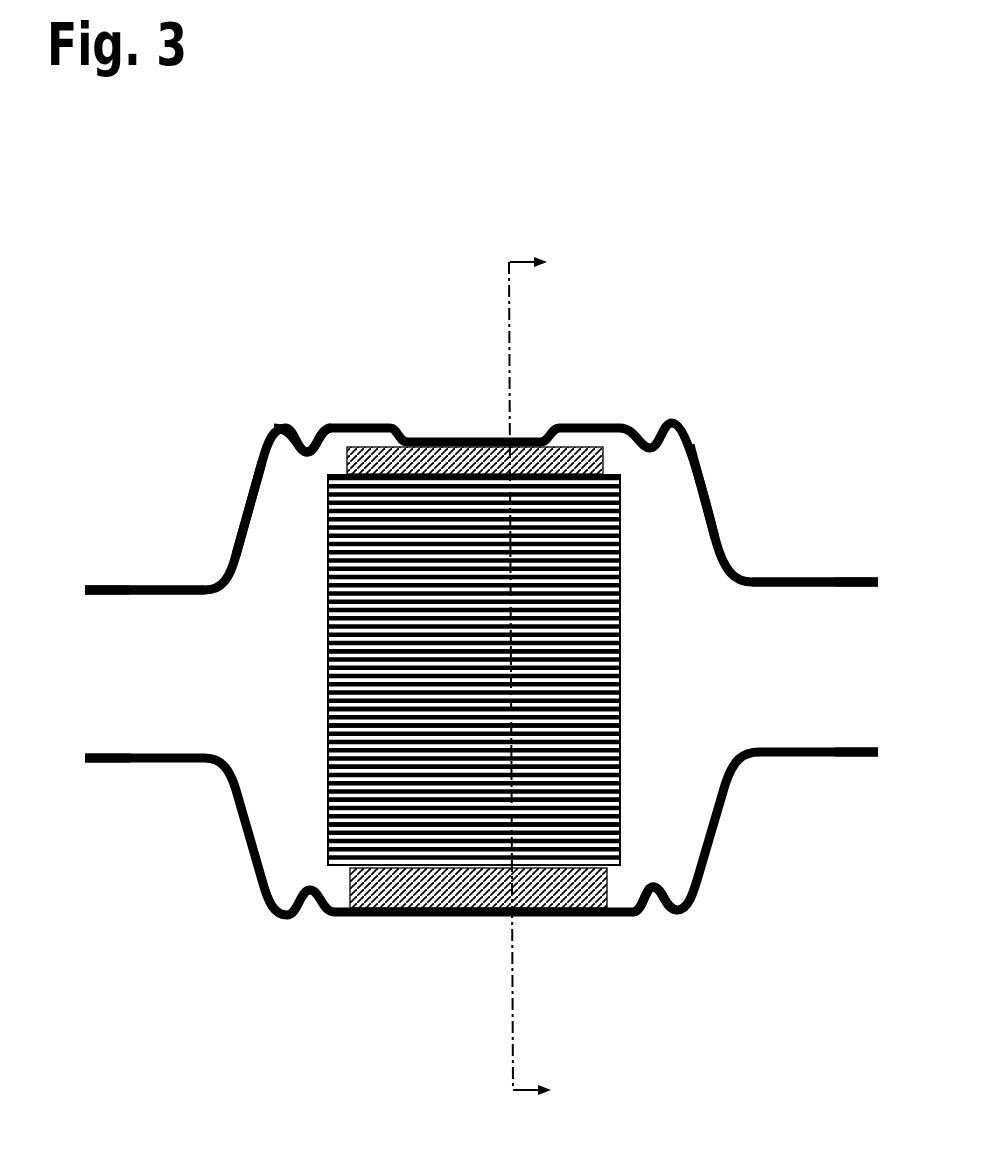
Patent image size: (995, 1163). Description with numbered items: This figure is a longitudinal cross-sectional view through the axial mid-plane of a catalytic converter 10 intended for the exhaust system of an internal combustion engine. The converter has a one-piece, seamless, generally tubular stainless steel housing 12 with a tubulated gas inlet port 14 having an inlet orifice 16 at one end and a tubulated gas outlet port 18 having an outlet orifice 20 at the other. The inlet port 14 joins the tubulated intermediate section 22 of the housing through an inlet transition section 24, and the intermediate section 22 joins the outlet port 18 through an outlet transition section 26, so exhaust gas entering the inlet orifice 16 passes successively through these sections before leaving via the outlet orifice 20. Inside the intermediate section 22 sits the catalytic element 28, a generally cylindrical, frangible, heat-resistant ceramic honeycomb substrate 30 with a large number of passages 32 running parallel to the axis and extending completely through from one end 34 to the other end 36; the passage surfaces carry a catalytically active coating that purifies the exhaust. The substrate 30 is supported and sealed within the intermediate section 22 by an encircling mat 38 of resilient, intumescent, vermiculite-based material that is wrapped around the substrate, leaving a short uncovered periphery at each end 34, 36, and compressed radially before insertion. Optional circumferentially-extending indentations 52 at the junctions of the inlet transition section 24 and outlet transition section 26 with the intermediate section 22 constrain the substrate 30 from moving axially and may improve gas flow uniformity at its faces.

The catalytic converter 10 is at (209, 257).
The housing 12 is at (401, 392).
The gas inlet port 14 is at (172, 574).
The inlet orifice 16 is at (95, 672).
The gas outlet port 18 is at (822, 578).
The outlet orifice 20 is at (863, 672).
The intermediate section 22 is at (463, 916).
The inlet transition section 24 is at (230, 503).
The outlet transition section 26 is at (710, 491).
The catalytic element 28 is at (324, 864).
The ceramic honeycomb substrate 30 is at (332, 723).
The passages 32 is at (332, 767).
The end of catalytic element 34 is at (330, 650).
The other end of catalytic element 36 is at (623, 707).
The mat 38 is at (605, 452).
The circumferentially-extending indentations 52 is at (307, 445).